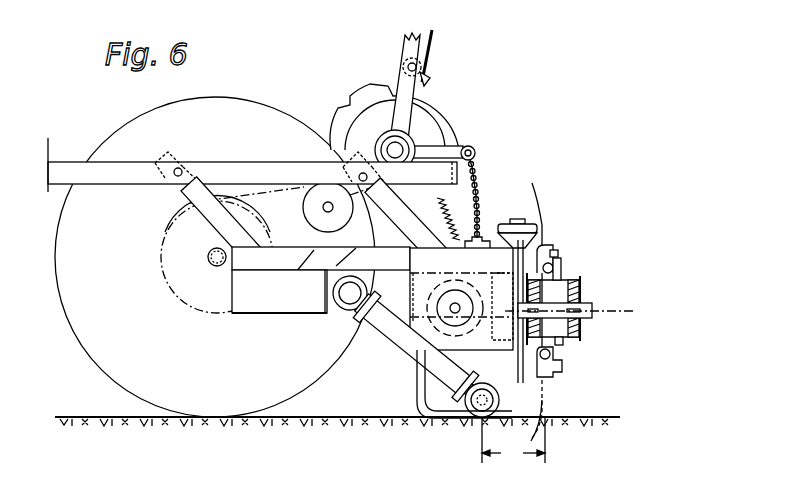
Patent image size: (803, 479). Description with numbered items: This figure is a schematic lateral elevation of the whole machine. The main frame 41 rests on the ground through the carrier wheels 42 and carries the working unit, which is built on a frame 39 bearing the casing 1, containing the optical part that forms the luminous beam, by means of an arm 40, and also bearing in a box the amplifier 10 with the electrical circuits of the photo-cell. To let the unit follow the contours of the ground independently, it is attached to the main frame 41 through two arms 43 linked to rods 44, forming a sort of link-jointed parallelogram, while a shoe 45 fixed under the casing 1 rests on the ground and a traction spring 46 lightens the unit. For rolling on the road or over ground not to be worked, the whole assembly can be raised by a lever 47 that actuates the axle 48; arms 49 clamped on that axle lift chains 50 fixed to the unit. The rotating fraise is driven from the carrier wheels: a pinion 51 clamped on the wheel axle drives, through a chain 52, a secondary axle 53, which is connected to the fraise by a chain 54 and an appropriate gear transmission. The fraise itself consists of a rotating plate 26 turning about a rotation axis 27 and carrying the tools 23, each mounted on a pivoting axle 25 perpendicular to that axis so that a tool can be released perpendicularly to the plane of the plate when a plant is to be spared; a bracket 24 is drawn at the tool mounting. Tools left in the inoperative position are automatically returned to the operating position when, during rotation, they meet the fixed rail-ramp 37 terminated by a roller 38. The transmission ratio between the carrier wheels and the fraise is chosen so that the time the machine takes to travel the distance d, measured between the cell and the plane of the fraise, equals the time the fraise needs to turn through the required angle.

The casing 1 is at (498, 401).
The amplifier 10 is at (300, 312).
The tool 23 is at (534, 186).
The bracket 24 is at (550, 253).
The pivoting axle 25 is at (552, 270).
The plate 26 is at (579, 296).
The rotation axis 27 is at (598, 311).
The fixed rail-ramp 37 is at (543, 243).
The roller 38 is at (503, 220).
The frame 39 is at (413, 277).
The arm 40 is at (383, 326).
The main frame 41 is at (228, 168).
The carrier wheel 42 is at (72, 280).
The arm 43 is at (213, 224).
The rod 44 is at (181, 168).
The shoe 45 is at (419, 411).
The traction spring 46 is at (440, 203).
The lever 47 is at (416, 53).
The axle 48 is at (405, 143).
The arm 49 is at (447, 148).
The chain 50 is at (477, 184).
The pinion 51 is at (196, 302).
The chain 52 is at (282, 273).
The secondary axle 53 is at (323, 207).
The chain 54 is at (321, 259).
The distance d is at (513, 440).